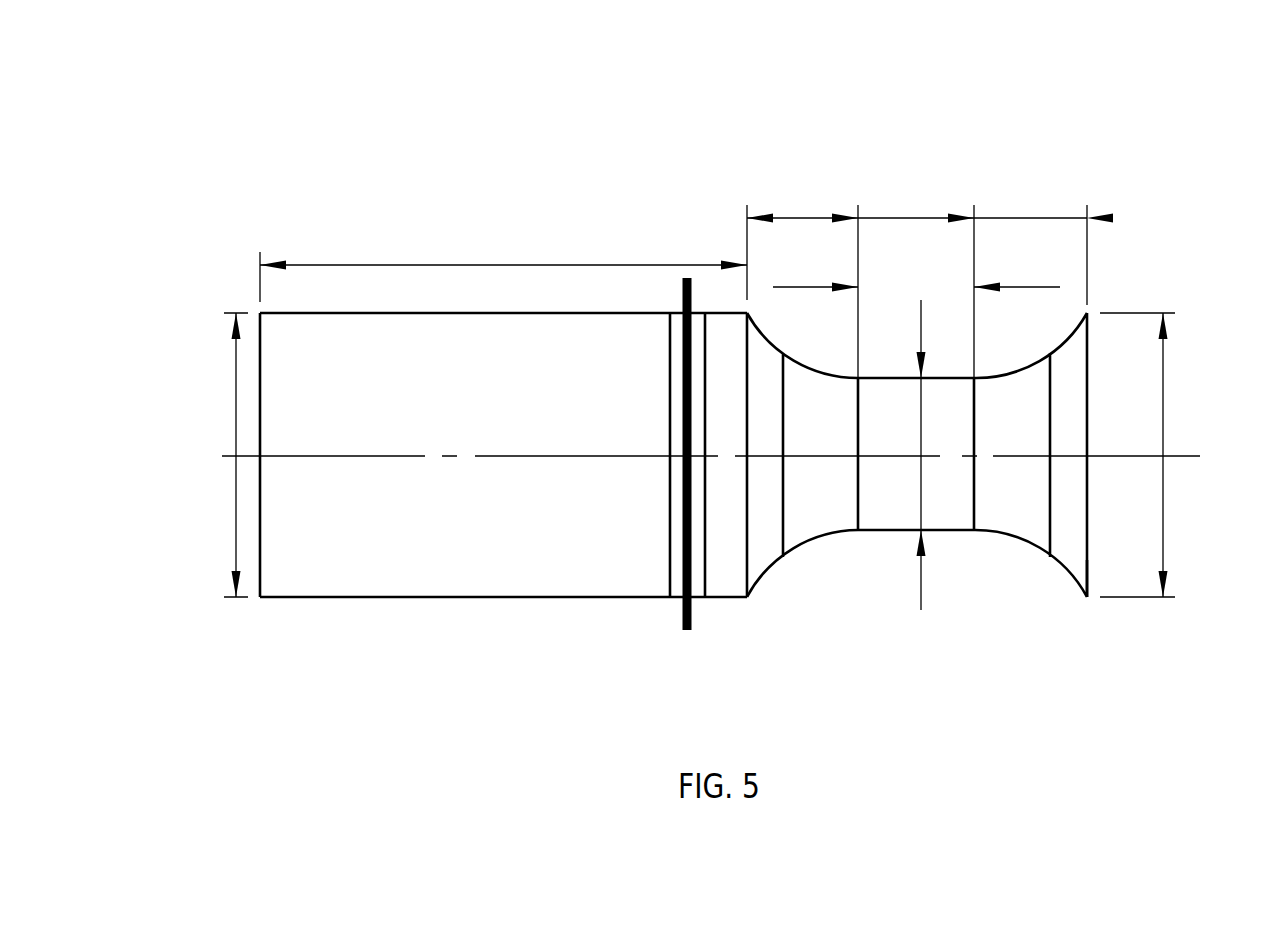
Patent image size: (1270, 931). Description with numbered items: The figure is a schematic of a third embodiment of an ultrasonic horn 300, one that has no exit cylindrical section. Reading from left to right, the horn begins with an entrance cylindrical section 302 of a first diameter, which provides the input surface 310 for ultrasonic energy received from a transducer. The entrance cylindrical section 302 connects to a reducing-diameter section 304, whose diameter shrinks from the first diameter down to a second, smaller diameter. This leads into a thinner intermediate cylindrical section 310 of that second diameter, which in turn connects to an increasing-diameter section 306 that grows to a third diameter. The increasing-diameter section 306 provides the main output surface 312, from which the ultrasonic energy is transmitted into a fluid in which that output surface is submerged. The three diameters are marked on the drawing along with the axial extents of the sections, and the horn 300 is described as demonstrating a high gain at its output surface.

The ultrasonic horn 300 is at (712, 170).
The entrance cylindrical section 302 is at (472, 408).
The reducing-diameter section 304 is at (747, 218).
The increasing-diameter section 306 is at (1087, 218).
The intermediate cylindrical section 310 is at (183, 620).
The main output surface 312 is at (1087, 565).